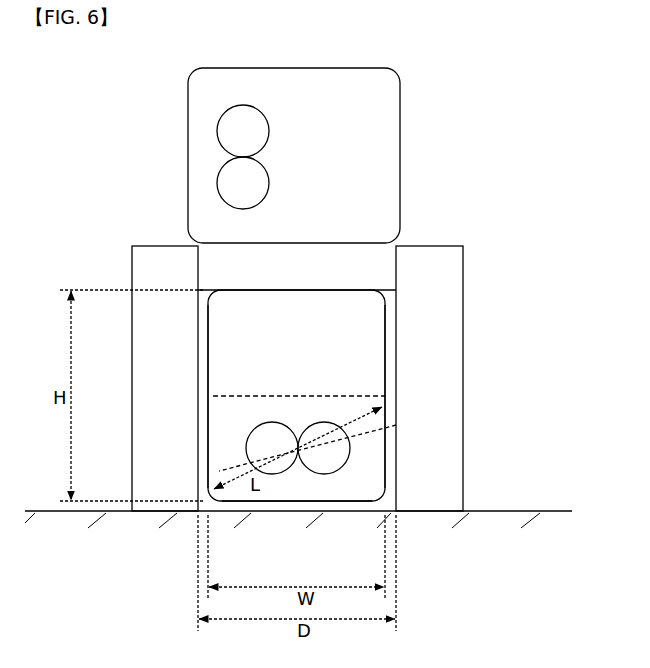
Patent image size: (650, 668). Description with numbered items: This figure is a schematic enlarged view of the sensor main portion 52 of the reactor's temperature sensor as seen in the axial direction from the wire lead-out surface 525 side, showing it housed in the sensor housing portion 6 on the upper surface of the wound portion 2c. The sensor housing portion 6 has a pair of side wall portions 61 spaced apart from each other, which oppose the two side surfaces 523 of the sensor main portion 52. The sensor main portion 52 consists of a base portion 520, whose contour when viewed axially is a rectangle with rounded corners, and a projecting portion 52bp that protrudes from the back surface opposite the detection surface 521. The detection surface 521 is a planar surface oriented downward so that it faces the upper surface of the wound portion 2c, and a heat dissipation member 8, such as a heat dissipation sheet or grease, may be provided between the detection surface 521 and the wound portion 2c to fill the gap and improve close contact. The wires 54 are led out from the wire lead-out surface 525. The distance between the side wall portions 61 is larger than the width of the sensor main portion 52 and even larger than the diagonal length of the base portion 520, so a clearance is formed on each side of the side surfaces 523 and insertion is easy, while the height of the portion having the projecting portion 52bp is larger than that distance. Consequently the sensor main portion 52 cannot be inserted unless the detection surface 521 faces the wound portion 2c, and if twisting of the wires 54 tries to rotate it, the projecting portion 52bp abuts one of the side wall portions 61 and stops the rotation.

The sensor housing portion 6 is at (319, 336).
The side wall portions 61 is at (160, 262).
The sensor main portion 52 is at (314, 312).
The detection surface 521 is at (188, 120).
The projecting portion 52bp is at (372, 354).
The side surfaces 523 is at (208, 451).
The wire lead-out surface 525 is at (357, 484).
The base portion 520 is at (338, 396).
The wires 54 is at (396, 425).
The heat dissipation member 8 is at (304, 511).
The wound portion 2c is at (497, 511).